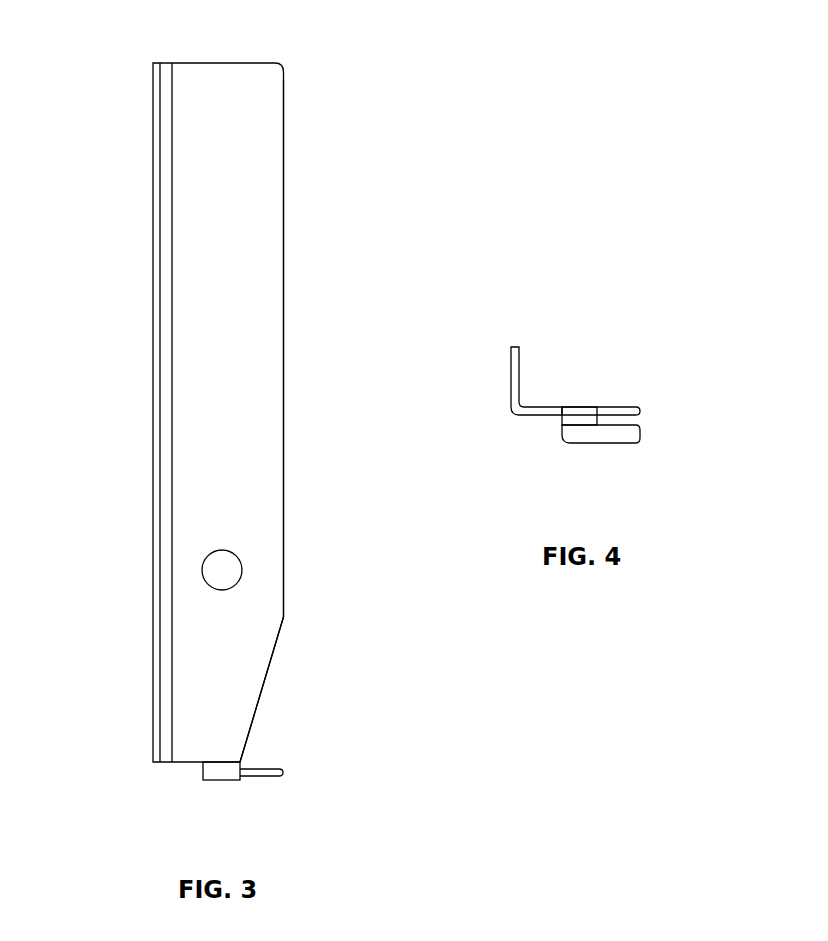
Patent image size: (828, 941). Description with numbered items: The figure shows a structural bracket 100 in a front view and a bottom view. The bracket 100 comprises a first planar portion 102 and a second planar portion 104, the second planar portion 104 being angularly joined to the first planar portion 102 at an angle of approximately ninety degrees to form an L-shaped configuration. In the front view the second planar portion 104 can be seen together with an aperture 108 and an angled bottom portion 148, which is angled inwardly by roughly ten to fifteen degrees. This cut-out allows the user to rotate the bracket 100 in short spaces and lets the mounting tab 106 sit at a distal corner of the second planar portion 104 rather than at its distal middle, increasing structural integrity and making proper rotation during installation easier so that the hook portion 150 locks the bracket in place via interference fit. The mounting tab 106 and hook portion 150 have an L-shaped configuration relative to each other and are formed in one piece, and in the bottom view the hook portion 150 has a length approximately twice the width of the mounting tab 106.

In FIG. 3, the structural bracket 100 is at (288, 48).
In FIG. 3, the first planar portion 102 is at (153, 112).
In FIG. 3, the second planar portion 104 is at (250, 226).
In FIG. 4, the second planar portion 104 is at (590, 437).
In FIG. 3, the mounting tab 106 is at (217, 780).
In FIG. 4, the mounting tab 106 is at (580, 407).
In FIG. 3, the aperture 108 is at (240, 570).
In FIG. 3, the bottom portion 148 is at (268, 668).
In FIG. 3, the hook portion 150 is at (283, 776).
In FIG. 4, the hook portion 150 is at (632, 407).